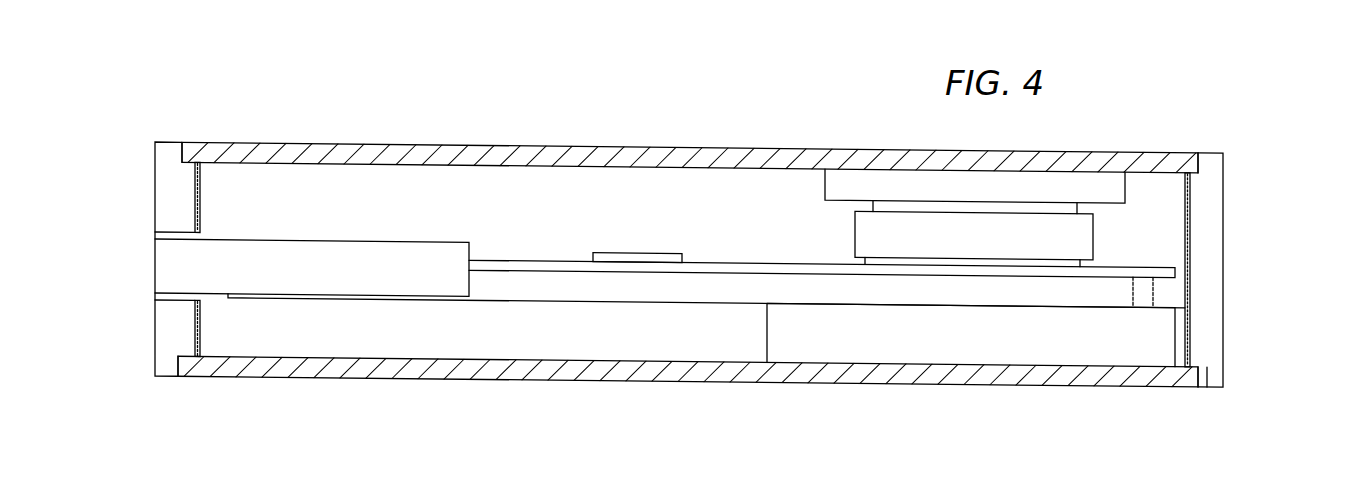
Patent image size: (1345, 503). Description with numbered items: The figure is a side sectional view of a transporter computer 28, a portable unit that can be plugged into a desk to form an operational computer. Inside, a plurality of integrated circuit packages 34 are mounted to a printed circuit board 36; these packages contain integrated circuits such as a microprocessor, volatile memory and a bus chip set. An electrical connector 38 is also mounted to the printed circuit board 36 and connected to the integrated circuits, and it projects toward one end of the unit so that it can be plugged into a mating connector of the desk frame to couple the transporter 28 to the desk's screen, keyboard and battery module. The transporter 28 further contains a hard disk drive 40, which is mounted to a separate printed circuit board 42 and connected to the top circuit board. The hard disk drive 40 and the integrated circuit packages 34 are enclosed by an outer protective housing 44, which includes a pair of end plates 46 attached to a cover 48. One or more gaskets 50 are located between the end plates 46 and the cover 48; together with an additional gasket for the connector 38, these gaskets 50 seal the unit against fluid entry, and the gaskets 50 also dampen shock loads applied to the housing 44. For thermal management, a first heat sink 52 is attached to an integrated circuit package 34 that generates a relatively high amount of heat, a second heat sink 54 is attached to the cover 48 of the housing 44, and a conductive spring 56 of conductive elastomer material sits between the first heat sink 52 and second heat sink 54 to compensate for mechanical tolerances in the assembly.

The transporter computer 28 is at (1272, 179).
The integrated circuit packages 34 is at (633, 253).
The printed circuit board 36 is at (1107, 273).
The electrical connector 38 is at (165, 256).
The hard disk drive 40 is at (848, 337).
The separate printed circuit board 42 is at (663, 305).
The outer protective housing 44 is at (502, 131).
The end plates 46 is at (160, 353).
The cover 48 is at (318, 152).
The gaskets 50 is at (200, 363).
The first heat sink 52 is at (160, 297).
The second heat sink 54 is at (1040, 182).
The conductive spring 56 is at (1080, 193).